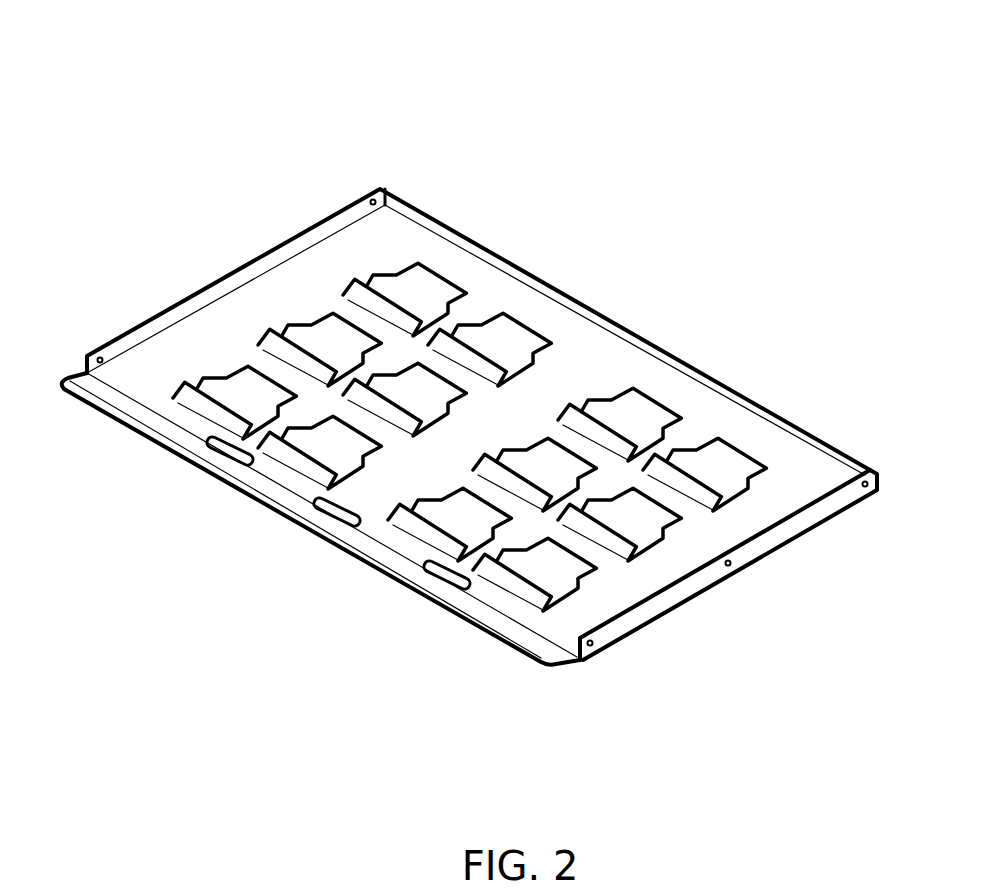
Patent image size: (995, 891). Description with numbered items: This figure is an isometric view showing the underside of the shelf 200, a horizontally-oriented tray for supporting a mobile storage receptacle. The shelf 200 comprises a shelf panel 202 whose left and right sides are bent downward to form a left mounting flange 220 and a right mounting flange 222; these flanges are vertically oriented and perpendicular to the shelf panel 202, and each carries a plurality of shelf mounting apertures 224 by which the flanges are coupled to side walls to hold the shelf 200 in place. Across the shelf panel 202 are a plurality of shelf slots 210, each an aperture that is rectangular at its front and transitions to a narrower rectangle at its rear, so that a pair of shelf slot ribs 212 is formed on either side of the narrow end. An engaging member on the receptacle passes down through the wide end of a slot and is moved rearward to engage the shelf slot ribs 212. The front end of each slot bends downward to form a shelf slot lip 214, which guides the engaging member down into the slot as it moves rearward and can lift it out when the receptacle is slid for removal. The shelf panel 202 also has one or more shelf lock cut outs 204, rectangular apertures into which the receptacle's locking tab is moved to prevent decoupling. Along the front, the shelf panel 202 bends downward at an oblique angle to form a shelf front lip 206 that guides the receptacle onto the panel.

The shelf 200 is at (42, 104).
The shelf panel 202 is at (586, 378).
The shelf lock cut outs 204 is at (433, 577).
The shelf front lip 206 is at (72, 382).
The shelf slots 210 is at (445, 278).
The shelf slot ribs 212 is at (617, 497).
The shelf slot lip 214 is at (178, 392).
The left mounting flange 220 is at (801, 535).
The right mounting flange 222 is at (268, 250).
The shelf mounting apertures 224 is at (868, 484).